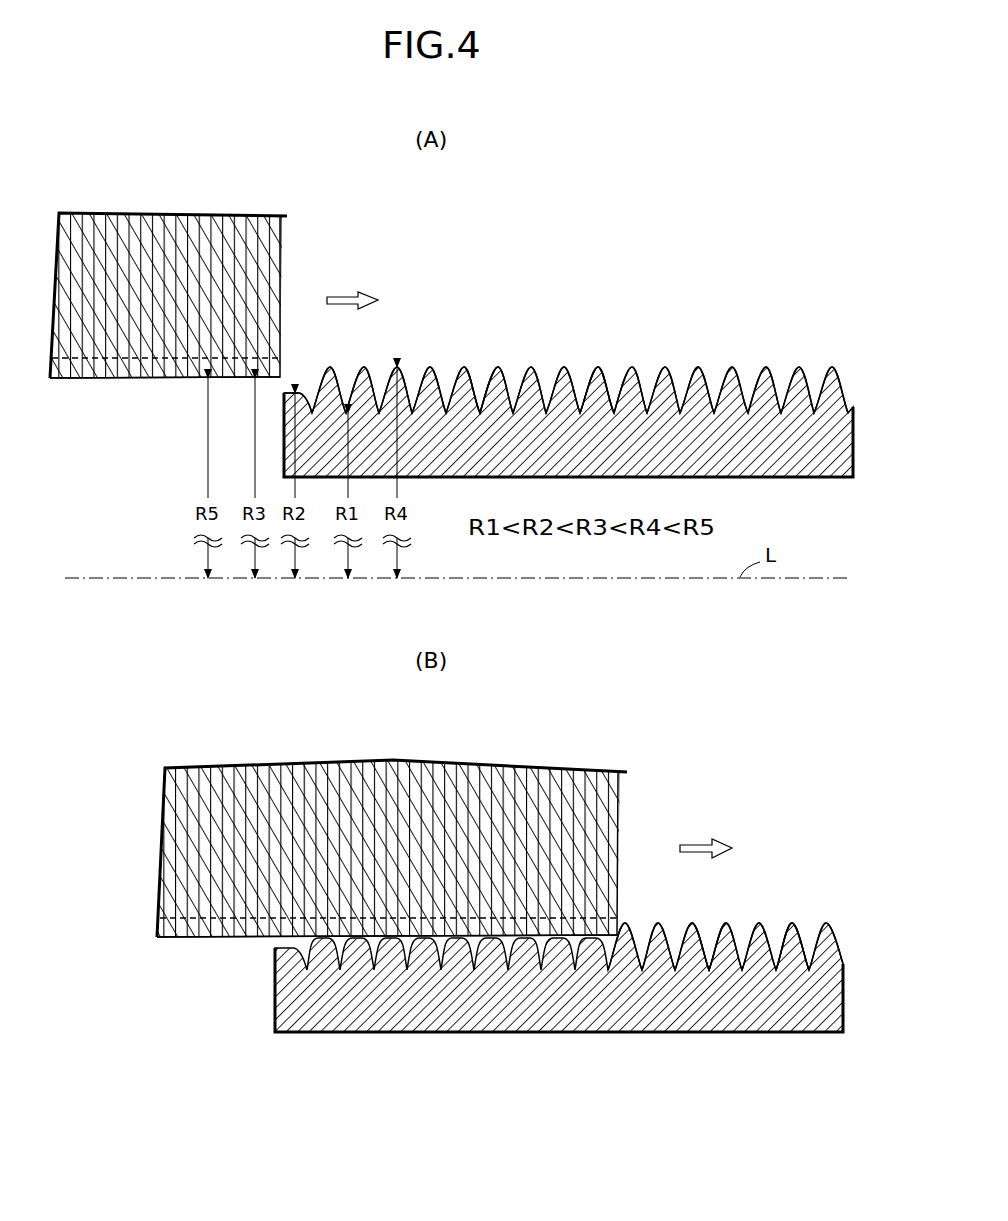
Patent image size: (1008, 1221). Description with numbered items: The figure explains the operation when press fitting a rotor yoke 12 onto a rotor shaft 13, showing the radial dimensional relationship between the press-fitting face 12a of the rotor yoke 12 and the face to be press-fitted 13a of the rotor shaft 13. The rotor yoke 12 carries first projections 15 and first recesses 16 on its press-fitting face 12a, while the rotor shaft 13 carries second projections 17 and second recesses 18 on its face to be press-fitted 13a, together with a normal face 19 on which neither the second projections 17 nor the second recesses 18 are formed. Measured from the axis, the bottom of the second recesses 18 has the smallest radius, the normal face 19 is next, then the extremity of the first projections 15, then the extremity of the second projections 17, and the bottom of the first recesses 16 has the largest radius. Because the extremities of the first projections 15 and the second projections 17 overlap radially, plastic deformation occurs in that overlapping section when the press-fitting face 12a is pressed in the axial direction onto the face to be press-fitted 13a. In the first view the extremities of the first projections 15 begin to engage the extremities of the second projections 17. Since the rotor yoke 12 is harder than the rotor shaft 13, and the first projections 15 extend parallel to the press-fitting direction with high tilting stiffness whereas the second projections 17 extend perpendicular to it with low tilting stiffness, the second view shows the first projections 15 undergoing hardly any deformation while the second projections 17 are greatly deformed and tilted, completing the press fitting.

The rotor yoke 12 is at (218, 190).
The press-fitting face 12a is at (107, 381).
The rotor shaft 13 is at (751, 321).
The face to be press-fitted 13a is at (651, 351).
The first projections 15 is at (140, 380).
The first recesses 16 is at (183, 380).
The second projections 17 is at (567, 410).
The second recesses 18 is at (481, 410).
The normal face 19 is at (291, 391).